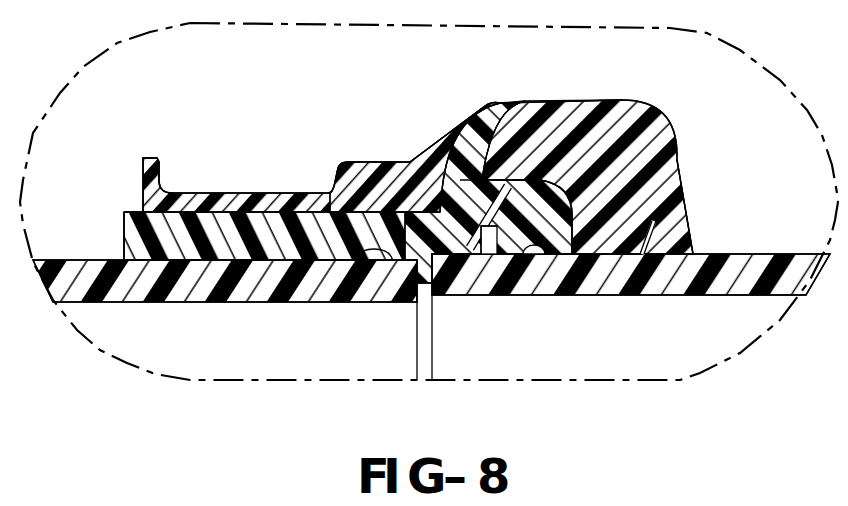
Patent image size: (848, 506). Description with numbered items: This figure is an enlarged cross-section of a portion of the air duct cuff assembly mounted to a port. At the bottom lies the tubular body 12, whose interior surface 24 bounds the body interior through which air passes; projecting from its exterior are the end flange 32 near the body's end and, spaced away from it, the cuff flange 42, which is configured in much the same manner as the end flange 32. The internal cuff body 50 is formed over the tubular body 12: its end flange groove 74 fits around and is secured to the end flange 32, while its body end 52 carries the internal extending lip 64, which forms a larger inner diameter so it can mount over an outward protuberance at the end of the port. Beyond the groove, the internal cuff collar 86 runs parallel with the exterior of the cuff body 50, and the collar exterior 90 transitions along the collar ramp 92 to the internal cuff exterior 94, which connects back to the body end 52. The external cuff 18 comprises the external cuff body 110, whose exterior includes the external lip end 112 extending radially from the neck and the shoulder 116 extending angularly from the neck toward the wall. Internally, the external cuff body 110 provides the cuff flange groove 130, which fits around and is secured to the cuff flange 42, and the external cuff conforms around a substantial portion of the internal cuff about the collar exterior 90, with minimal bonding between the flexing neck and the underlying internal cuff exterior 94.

The tubular body 12 is at (768, 243).
The external cuff 18 is at (662, 105).
The interior surface 24 is at (737, 296).
The end flange 32 is at (483, 235).
The cuff flange 42 is at (660, 212).
The internal cuff body 50 is at (288, 208).
The body end 52 is at (123, 220).
The internal extending lip 64 is at (370, 266).
The end flange groove 74 is at (473, 252).
The internal cuff collar 86 is at (522, 262).
The collar exterior 90 is at (493, 183).
The collar ramp 92 is at (430, 197).
The internal cuff exterior 94 is at (197, 197).
The external cuff body 110 is at (587, 100).
The external lip end 112 is at (145, 158).
The shoulder 116 is at (447, 137).
The cuff flange groove 130 is at (638, 254).